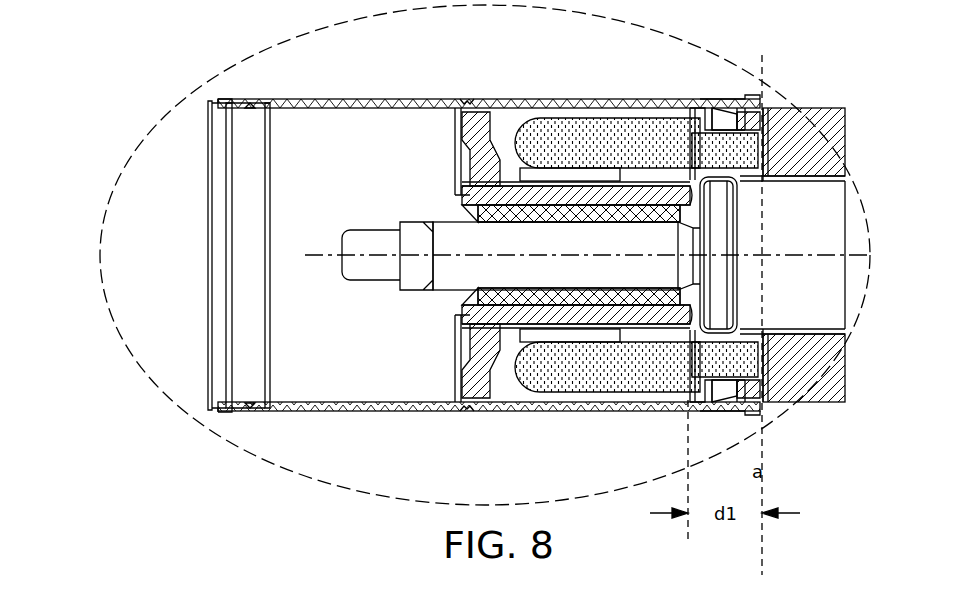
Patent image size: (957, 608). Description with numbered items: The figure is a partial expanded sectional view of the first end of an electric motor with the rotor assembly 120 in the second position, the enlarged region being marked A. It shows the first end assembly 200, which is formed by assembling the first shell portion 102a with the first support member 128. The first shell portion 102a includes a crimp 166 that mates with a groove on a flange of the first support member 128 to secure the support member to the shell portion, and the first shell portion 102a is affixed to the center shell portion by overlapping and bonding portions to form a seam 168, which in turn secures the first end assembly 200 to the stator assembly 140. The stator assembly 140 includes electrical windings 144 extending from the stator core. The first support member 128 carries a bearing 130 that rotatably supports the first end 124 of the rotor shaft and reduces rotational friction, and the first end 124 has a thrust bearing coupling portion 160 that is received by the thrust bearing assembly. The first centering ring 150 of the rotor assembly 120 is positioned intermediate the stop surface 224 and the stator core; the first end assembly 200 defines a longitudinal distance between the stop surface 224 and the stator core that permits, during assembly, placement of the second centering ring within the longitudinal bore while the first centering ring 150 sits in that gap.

The detail region A is at (103, 258).
The first end assembly 200 is at (376, 462).
The first shell portion 102a is at (393, 99).
The rotor assembly 120 is at (842, 300).
The first end 124 is at (452, 268).
The first support member 128 is at (478, 126).
The bearing 130 is at (553, 297).
The stator assembly 140 is at (805, 140).
The electrical windings 144 is at (600, 135).
The first centering ring 150 is at (725, 215).
The thrust bearing coupling portion 160 is at (374, 238).
The crimp 166 is at (466, 98).
The seam 168 is at (722, 405).
The stop surface 224 is at (690, 188).